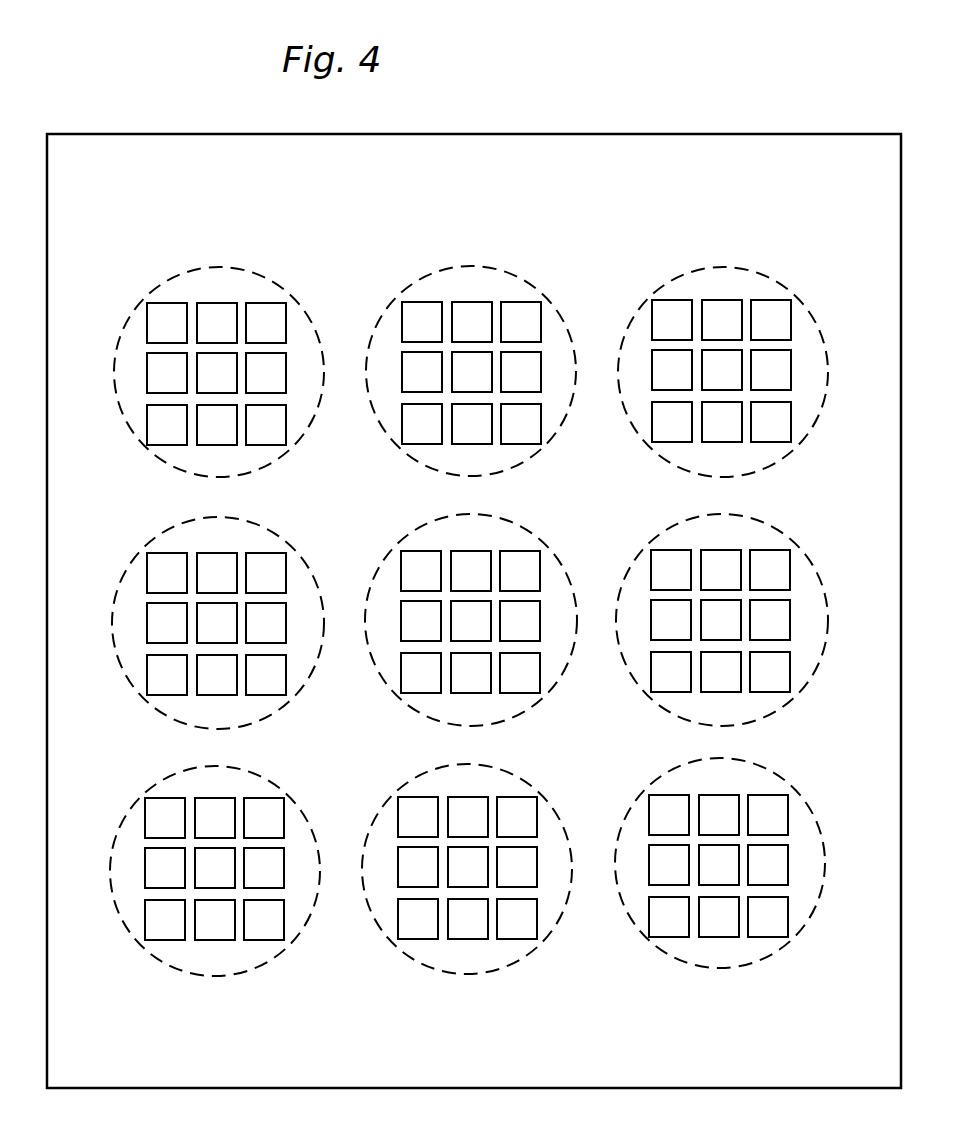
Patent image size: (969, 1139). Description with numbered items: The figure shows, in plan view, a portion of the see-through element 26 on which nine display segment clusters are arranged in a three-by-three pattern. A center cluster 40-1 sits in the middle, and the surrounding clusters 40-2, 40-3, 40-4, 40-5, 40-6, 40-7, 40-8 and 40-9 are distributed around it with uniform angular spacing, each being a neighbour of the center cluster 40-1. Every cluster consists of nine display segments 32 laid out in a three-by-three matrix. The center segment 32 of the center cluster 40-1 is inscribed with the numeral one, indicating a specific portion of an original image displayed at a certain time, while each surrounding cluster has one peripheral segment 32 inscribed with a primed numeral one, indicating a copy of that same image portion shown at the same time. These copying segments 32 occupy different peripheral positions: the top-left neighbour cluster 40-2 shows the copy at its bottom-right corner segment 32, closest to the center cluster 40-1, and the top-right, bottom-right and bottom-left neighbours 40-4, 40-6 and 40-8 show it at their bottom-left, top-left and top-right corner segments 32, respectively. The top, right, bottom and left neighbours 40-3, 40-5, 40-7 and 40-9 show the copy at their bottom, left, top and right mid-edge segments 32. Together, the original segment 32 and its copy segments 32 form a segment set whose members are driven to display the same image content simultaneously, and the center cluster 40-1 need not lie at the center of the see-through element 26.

The see-through element 26 is at (450, 132).
The center cluster 40-1 is at (525, 528).
The top-left neighbour cluster 40-2 is at (137, 305).
The top neighbour cluster 40-3 is at (512, 272).
The top-right neighbour cluster 40-4 is at (762, 272).
The right neighbour cluster 40-5 is at (808, 560).
The bottom-right neighbour cluster 40-6 is at (783, 777).
The bottom neighbour cluster 40-7 is at (517, 967).
The bottom-left neighbour cluster 40-8 is at (250, 977).
The left neighbour cluster 40-9 is at (158, 707).
The display segment 32 is at (267, 302).